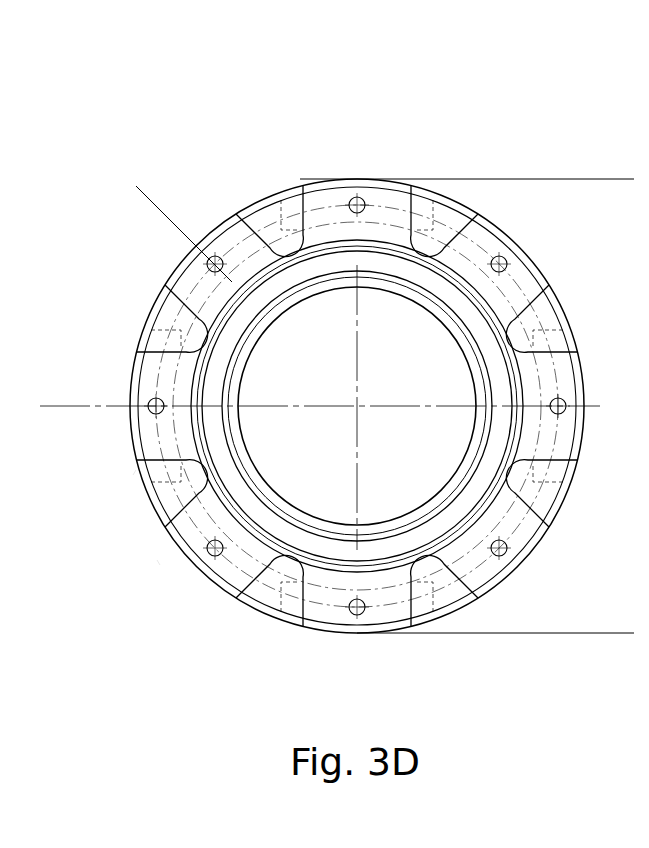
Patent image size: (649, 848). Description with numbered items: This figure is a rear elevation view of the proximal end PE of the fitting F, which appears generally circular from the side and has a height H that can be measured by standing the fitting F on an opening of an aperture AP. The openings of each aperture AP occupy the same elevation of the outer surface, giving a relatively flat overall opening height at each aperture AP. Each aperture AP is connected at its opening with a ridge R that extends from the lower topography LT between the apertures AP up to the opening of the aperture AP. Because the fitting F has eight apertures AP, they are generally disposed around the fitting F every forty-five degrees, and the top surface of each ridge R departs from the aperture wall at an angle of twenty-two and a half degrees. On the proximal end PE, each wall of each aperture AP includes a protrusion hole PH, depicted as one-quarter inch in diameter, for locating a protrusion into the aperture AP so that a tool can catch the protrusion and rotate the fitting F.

The proximal end PE is at (367, 140).
The fitting F is at (594, 157).
The lower topography LT is at (278, 233).
The protrusion hole PH is at (518, 563).
The ridge R is at (127, 505).
The aperture AP is at (180, 580).
The height H is at (623, 179).